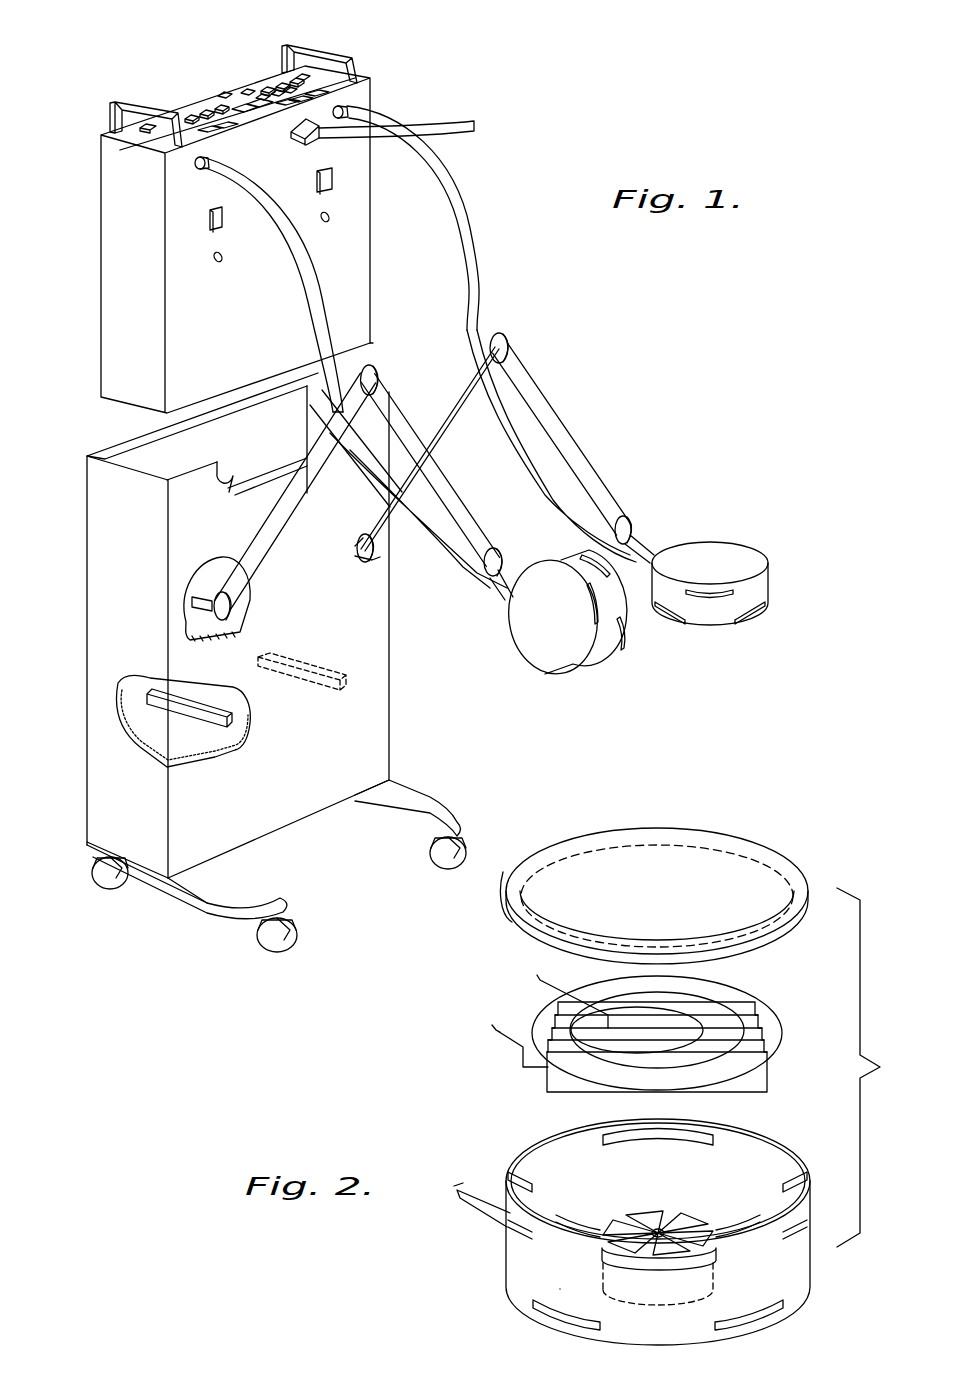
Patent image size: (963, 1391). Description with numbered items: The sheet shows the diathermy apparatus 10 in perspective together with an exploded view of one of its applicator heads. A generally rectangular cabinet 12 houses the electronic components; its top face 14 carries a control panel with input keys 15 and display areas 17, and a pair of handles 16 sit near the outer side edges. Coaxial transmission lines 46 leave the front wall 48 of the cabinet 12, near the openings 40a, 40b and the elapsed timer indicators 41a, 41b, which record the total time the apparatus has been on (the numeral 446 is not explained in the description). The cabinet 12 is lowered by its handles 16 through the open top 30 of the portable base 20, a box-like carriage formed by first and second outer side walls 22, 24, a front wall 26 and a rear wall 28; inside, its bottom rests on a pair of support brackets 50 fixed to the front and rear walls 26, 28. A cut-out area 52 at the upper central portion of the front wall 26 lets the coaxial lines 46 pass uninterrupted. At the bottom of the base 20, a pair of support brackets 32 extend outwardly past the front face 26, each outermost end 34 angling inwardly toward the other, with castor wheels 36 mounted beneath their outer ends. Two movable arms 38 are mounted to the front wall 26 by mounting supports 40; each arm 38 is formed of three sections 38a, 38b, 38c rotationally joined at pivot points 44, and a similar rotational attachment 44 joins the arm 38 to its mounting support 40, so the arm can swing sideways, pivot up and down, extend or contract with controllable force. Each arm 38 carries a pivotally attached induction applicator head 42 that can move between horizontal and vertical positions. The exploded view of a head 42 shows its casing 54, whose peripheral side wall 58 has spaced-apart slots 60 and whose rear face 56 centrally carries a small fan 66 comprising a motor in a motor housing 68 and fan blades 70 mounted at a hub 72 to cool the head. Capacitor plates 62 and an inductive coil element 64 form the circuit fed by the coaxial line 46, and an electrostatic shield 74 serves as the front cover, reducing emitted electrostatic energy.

In FIG. 1, the diathermy apparatus 10 is at (80, 385).
In FIG. 1, the cabinet 12 is at (128, 236).
In FIG. 1, the top face 14 is at (177, 110).
In FIG. 1, the input keys 15 is at (200, 100).
In FIG. 1, the handles 16 is at (128, 104).
In FIG. 1, the display areas 17 is at (222, 130).
In FIG. 1, the portable base 20 is at (100, 565).
In FIG. 1, the first outer side wall 22 is at (107, 747).
In FIG. 1, the second outer side wall 24 is at (322, 398).
In FIG. 1, the front wall 26 is at (370, 690).
In FIG. 1, the rear wall 28 is at (147, 453).
In FIG. 1, the open top 30 is at (197, 437).
In FIG. 1, the support brackets 32 is at (210, 888).
In FIG. 1, the outermost end 34 is at (283, 895).
In FIG. 1, the castor wheels 36 is at (102, 888).
In FIG. 1, the movable arms 38 is at (593, 457).
In FIG. 1, the first arm section 38a is at (328, 445).
In FIG. 1, the second arm section 38b is at (557, 427).
In FIG. 1, the third arm section 38c is at (647, 547).
In FIG. 1, the mounting support 40 is at (197, 600).
In FIG. 1, the opening 40a is at (212, 260).
In FIG. 1, the opening 40b is at (331, 218).
In FIG. 1, the elapsed timer indicator 41a is at (207, 226).
In FIG. 1, the elapsed timer indicator 41b is at (333, 183).
In FIG. 1, the induction applicator head 42 is at (757, 553).
In FIG. 2, the induction applicator head 42 is at (885, 1058).
In FIG. 1, the pivot points 44 is at (488, 348).
In FIG. 1, the coaxial transmission line 46 is at (443, 186).
In FIG. 2, the coaxial transmission line 46 is at (490, 1190).
In FIG. 1, the front wall of cabinet 48 is at (345, 265).
In FIG. 1, the support brackets 50 is at (185, 725).
In FIG. 1, the cut-out area 52 is at (228, 488).
In FIG. 1, the display indicators 446 is at (238, 110).
In FIG. 2, the casing 54 is at (780, 1267).
In FIG. 2, the rear face 56 is at (587, 1230).
In FIG. 2, the peripheral side wall 58 is at (652, 1328).
In FIG. 2, the slots 60 is at (540, 1160).
In FIG. 2, the capacitor plates 62 is at (757, 1098).
In FIG. 2, the inductive coil element 64 is at (747, 997).
In FIG. 2, the fan 66 is at (595, 1250).
In FIG. 2, the motor housing 68 is at (687, 1300).
In FIG. 2, the fan blades 70 is at (670, 1203).
In FIG. 2, the hub 72 is at (667, 1223).
In FIG. 2, the electrostatic shield 74 is at (722, 873).